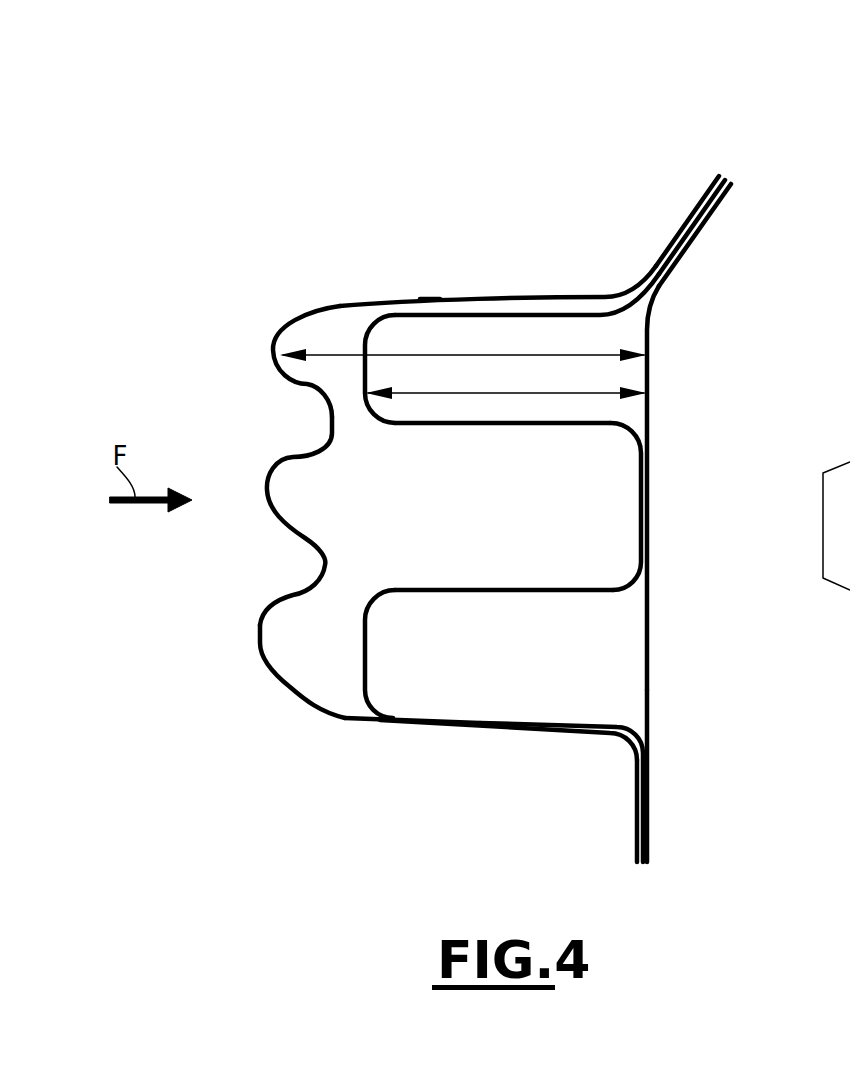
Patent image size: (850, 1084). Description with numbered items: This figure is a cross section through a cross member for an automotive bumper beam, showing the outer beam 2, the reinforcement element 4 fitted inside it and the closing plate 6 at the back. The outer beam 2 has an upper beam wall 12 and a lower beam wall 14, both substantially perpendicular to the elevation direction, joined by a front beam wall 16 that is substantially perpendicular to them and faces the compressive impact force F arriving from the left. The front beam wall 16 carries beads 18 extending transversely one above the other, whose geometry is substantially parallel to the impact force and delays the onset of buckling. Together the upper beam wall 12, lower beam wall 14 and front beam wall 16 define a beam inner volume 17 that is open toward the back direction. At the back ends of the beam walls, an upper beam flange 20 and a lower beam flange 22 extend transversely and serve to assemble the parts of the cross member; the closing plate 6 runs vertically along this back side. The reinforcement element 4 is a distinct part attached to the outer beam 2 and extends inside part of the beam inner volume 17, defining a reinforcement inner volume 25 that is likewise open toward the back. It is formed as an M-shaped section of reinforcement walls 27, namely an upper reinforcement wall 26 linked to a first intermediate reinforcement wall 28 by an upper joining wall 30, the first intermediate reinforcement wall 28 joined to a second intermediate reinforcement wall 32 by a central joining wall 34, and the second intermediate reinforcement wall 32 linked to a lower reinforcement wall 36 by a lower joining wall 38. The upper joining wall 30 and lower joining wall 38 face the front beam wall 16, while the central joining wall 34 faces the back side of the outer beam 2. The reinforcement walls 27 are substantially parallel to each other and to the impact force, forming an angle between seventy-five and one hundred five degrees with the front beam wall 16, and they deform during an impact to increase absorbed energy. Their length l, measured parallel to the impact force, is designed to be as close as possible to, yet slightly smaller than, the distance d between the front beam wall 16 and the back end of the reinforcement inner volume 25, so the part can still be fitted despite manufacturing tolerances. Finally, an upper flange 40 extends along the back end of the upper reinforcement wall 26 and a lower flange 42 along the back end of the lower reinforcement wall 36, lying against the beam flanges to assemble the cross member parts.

The outer beam 2 is at (295, 322).
The reinforcement element 4 is at (403, 424).
The closing plate 6 is at (650, 382).
The upper beam wall 12 is at (332, 306).
The lower beam wall 14 is at (352, 722).
The front beam wall 16 is at (272, 344).
The beam inner volume 17 is at (443, 537).
The beads 18 is at (322, 560).
The upper beam flange 20 is at (686, 228).
The lower beam flange 22 is at (618, 743).
The reinforcement inner volume 25 is at (612, 695).
The upper reinforcement wall 26 is at (500, 315).
The reinforcement walls 27 is at (562, 317).
The first intermediate reinforcement wall 28 is at (490, 424).
The upper joining wall 30 is at (360, 372).
The second intermediate reinforcement wall 32 is at (557, 593).
The central joining wall 34 is at (642, 498).
The lower reinforcement wall 36 is at (515, 722).
The lower joining wall 38 is at (365, 663).
The upper flange 40 is at (695, 243).
The lower flange 42 is at (646, 808).